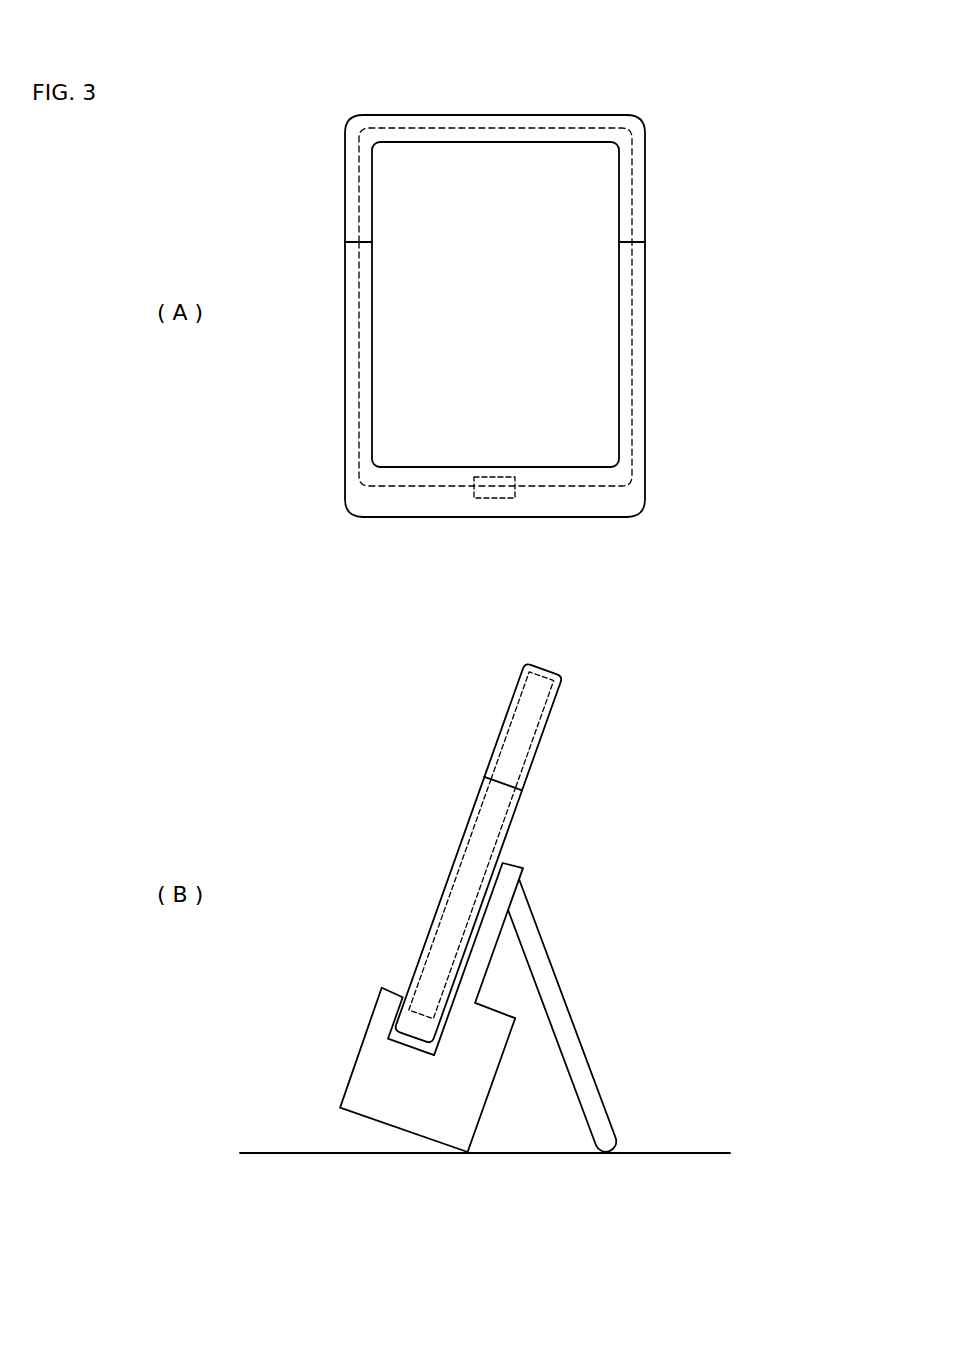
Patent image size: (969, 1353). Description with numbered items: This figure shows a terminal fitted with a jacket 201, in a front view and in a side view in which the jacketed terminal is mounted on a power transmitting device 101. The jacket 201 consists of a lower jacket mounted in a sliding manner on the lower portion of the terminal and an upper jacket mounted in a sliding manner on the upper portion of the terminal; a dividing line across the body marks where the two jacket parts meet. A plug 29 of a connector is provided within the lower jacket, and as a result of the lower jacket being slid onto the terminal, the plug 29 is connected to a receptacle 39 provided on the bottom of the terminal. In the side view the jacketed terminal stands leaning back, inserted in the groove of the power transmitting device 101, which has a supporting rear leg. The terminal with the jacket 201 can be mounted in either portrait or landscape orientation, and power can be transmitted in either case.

The jacket 201 is at (586, 316).
The receptacle 39 is at (511, 477).
The plug 29 is at (510, 498).
The power transmitting device 101 is at (477, 1082).